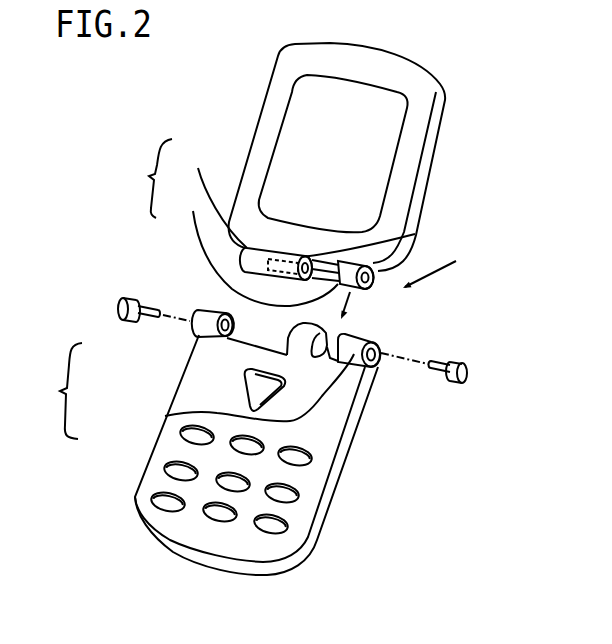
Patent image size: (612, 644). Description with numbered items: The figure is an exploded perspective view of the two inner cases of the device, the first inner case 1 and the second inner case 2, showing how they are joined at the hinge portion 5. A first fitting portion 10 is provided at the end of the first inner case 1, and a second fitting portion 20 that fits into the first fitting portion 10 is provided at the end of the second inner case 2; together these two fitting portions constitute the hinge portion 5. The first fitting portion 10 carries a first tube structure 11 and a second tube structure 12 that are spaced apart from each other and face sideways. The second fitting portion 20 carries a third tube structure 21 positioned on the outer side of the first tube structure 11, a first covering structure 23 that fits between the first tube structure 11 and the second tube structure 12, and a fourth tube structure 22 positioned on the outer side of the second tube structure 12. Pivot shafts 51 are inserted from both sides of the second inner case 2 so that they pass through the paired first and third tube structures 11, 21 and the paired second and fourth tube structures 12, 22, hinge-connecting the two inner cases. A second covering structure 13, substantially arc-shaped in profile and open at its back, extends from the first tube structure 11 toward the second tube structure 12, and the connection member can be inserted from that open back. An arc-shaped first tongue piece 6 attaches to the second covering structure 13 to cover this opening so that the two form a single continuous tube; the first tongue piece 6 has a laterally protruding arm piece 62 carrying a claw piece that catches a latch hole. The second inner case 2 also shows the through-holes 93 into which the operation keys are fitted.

The first inner case 1 is at (405, 180).
The second inner case 2 is at (317, 477).
The hinge portion 5 is at (479, 273).
The first tongue piece 6 is at (271, 259).
The first fitting portion 10 is at (146, 178).
The first tube structure 11 is at (209, 198).
The second tube structure 12 is at (248, 248).
The second covering structure 13 is at (293, 250).
The second fitting portion 20 is at (59, 391).
The third tube structure 21 is at (199, 330).
The fourth tube structure 22 is at (165, 416).
The first covering structure 23 is at (285, 355).
The pivot shaft 51 is at (467, 369).
The arm piece 62 is at (415, 234).
The through-holes 93 is at (270, 531).